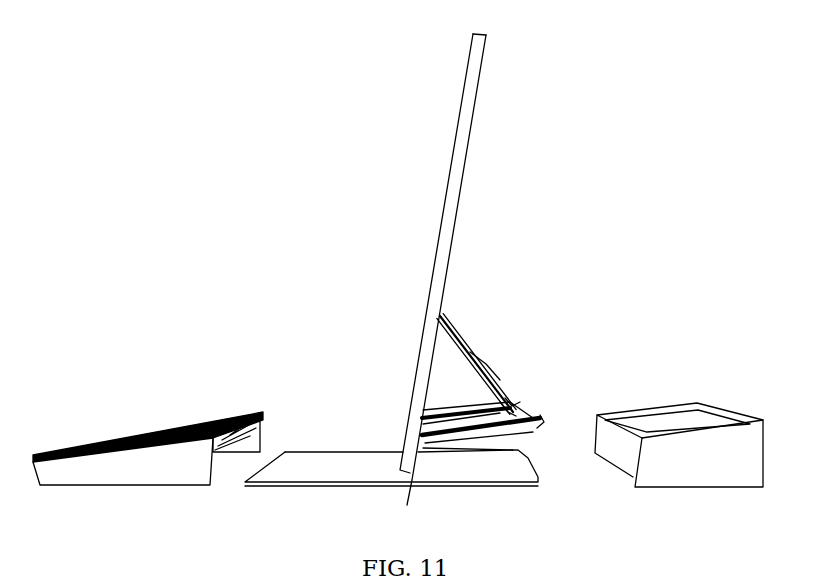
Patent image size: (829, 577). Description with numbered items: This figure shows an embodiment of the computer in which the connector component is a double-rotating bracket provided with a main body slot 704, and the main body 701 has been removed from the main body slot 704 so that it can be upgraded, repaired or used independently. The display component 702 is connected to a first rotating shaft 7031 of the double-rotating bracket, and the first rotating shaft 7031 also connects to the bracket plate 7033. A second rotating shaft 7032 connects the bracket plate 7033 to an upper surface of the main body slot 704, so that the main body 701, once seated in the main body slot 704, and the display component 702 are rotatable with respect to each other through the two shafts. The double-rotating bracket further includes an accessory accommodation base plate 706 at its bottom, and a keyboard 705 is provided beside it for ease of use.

The main body 701 is at (697, 403).
The display component 702 is at (452, 194).
The first rotating shaft 7031 is at (450, 312).
The second rotating shaft 7032 is at (505, 400).
The bracket plate 7033 is at (484, 355).
The main body slot 704 is at (522, 413).
The keyboard 705 is at (262, 410).
The accessory accommodation base plate 706 is at (305, 455).